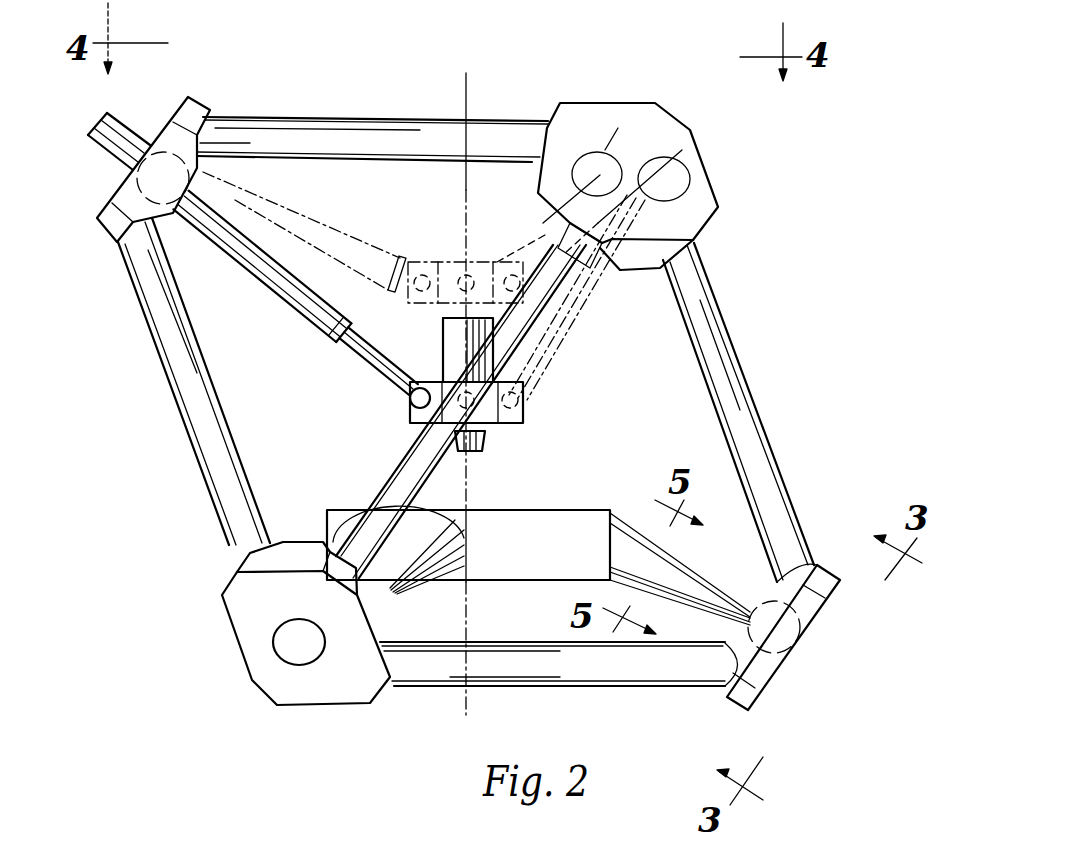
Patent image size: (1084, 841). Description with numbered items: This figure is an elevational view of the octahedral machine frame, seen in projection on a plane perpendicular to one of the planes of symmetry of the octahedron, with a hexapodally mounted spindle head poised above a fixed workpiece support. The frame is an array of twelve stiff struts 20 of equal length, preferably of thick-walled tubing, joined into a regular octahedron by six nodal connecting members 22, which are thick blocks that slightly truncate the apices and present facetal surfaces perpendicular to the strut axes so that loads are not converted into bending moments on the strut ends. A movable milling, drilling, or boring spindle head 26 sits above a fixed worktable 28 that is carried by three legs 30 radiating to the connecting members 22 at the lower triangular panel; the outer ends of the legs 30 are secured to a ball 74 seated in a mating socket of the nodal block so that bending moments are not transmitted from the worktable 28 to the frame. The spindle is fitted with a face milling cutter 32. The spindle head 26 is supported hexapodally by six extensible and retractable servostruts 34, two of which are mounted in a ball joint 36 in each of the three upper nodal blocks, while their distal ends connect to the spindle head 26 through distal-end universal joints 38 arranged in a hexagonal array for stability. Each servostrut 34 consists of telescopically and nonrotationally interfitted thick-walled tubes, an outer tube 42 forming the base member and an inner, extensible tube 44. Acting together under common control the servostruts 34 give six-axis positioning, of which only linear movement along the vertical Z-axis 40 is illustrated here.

The strut 20 is at (327, 132).
The nodal connecting member 22 is at (197, 104).
The spindle head 26 is at (514, 414).
The worktable 28 is at (546, 563).
The leg 30 is at (398, 588).
The face milling cutter 32 is at (484, 444).
The servostrut 34 is at (409, 299).
The ball joint 36 is at (218, 173).
The distal-end universal joint 38 is at (413, 410).
The Z-axis 40 is at (470, 88).
The outer tube 42 is at (242, 264).
The inner tube 44 is at (382, 368).
The ball 74 is at (305, 655).